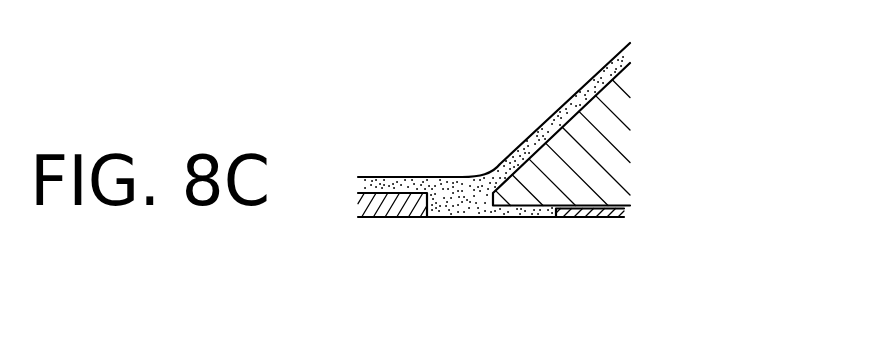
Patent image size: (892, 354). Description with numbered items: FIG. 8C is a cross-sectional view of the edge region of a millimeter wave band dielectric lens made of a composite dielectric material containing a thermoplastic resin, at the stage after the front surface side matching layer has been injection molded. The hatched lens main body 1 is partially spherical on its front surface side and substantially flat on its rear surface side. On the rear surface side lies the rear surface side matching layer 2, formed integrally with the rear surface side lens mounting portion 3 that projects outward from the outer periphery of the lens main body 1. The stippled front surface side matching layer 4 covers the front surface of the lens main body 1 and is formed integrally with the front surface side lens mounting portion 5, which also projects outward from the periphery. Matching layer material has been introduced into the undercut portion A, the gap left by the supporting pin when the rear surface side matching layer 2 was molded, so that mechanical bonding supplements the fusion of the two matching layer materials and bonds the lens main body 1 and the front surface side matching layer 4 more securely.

The lens main body 1 is at (615, 132).
The rear surface side matching layer 2 is at (602, 217).
The rear surface side lens mounting portion 3 is at (377, 217).
The front surface side matching layer 4 is at (579, 89).
The front surface side lens mounting portion 5 is at (392, 177).
The undercut portion A is at (478, 217).